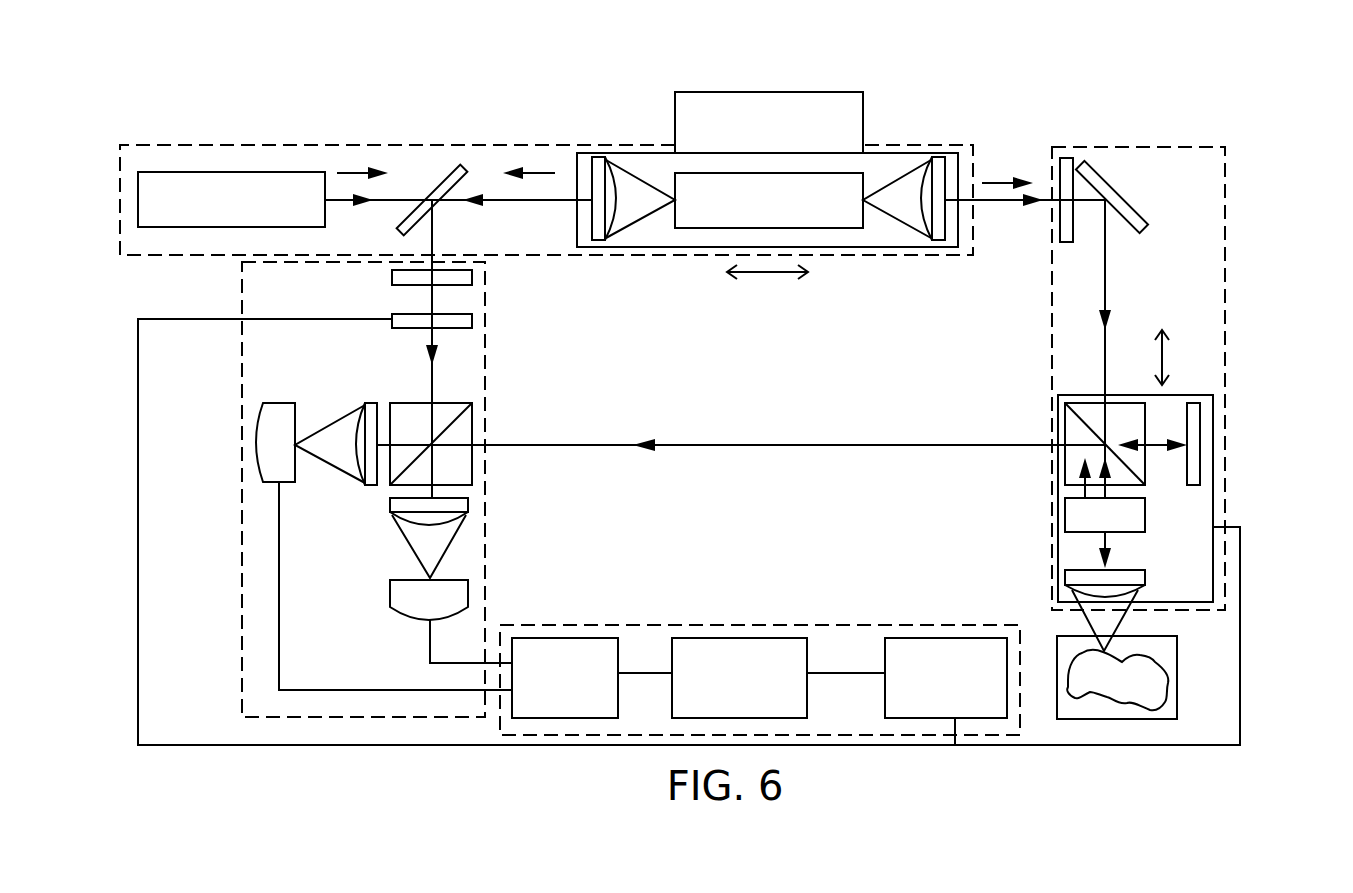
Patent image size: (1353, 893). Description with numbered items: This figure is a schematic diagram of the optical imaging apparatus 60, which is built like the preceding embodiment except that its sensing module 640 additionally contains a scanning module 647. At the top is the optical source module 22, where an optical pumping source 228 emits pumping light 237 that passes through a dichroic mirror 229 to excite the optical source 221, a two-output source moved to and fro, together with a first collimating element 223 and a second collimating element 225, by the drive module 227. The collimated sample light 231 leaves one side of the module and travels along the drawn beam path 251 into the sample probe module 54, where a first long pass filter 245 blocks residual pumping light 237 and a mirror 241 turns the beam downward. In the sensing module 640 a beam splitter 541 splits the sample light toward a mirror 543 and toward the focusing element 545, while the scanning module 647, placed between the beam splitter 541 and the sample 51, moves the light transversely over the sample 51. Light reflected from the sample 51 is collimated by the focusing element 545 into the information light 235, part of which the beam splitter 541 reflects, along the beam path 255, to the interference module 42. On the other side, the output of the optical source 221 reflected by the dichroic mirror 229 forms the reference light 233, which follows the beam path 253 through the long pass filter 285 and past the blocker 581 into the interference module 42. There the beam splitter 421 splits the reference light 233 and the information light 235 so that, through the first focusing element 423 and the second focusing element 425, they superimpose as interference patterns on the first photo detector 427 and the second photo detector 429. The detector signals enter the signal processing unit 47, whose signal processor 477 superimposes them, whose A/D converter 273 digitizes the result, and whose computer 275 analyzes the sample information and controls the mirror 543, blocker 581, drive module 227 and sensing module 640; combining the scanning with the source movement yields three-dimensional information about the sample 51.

The optical source module 22 is at (653, 145).
The optical pumping source 228 is at (250, 172).
The pumping light 237 is at (372, 170).
The reference light 233 is at (533, 170).
The dichroic mirror 229 is at (445, 158).
The reflected light beam 253 is at (522, 203).
The second collimating element 225 is at (583, 157).
The drive module 227 is at (837, 92).
The optical source 221 is at (687, 228).
The first collimating element 223 is at (947, 163).
The sample light 231 is at (1010, 180).
The light beam 251 is at (977, 203).
The optical imaging apparatus 60 is at (1243, 73).
The sample probe module 54 is at (1105, 147).
The first long pass filter 245 is at (1070, 156).
The mirror 241 is at (1137, 203).
The sensing module 640 is at (1213, 443).
The beam splitter 541 is at (1083, 392).
The mirror 543 is at (1207, 393).
The interference beam 255 is at (742, 442).
The information light 235 is at (1070, 468).
The scanning module 647 is at (1145, 515).
The focusing element 545 is at (1065, 575).
The sample 51 is at (1122, 662).
The interference module 42 is at (485, 323).
The long pass filter 285 is at (392, 278).
The blocker 581 is at (417, 323).
The beam splitter 421 is at (473, 427).
The first focusing element 423 is at (362, 403).
The first photo detector 427 is at (263, 403).
The second focusing element 425 is at (467, 500).
The second photo detector 429 is at (395, 580).
The signal processing unit 47 is at (844, 623).
The signal processor 477 is at (585, 638).
The A/D converter 273 is at (745, 638).
The computer 275 is at (945, 638).